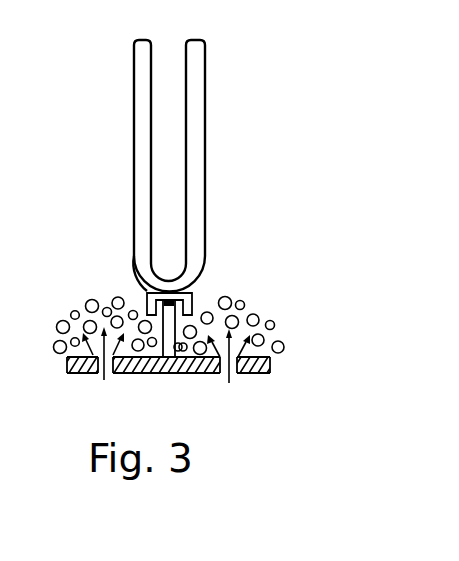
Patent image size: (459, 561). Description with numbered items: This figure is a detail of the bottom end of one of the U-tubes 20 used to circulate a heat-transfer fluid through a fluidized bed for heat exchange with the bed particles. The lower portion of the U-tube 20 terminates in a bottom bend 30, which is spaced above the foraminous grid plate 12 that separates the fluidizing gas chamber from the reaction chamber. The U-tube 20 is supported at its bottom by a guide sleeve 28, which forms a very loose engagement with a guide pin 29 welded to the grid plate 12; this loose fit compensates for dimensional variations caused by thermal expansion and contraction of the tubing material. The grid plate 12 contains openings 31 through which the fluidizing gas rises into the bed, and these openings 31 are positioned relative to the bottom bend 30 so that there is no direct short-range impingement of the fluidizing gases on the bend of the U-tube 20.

The U-tube 20 is at (197, 155).
The bottom bend 30 is at (162, 288).
The guide sleeve 28 is at (195, 297).
The guide pin 29 is at (183, 373).
The grid plate 12 is at (270, 366).
The openings 31 is at (238, 373).